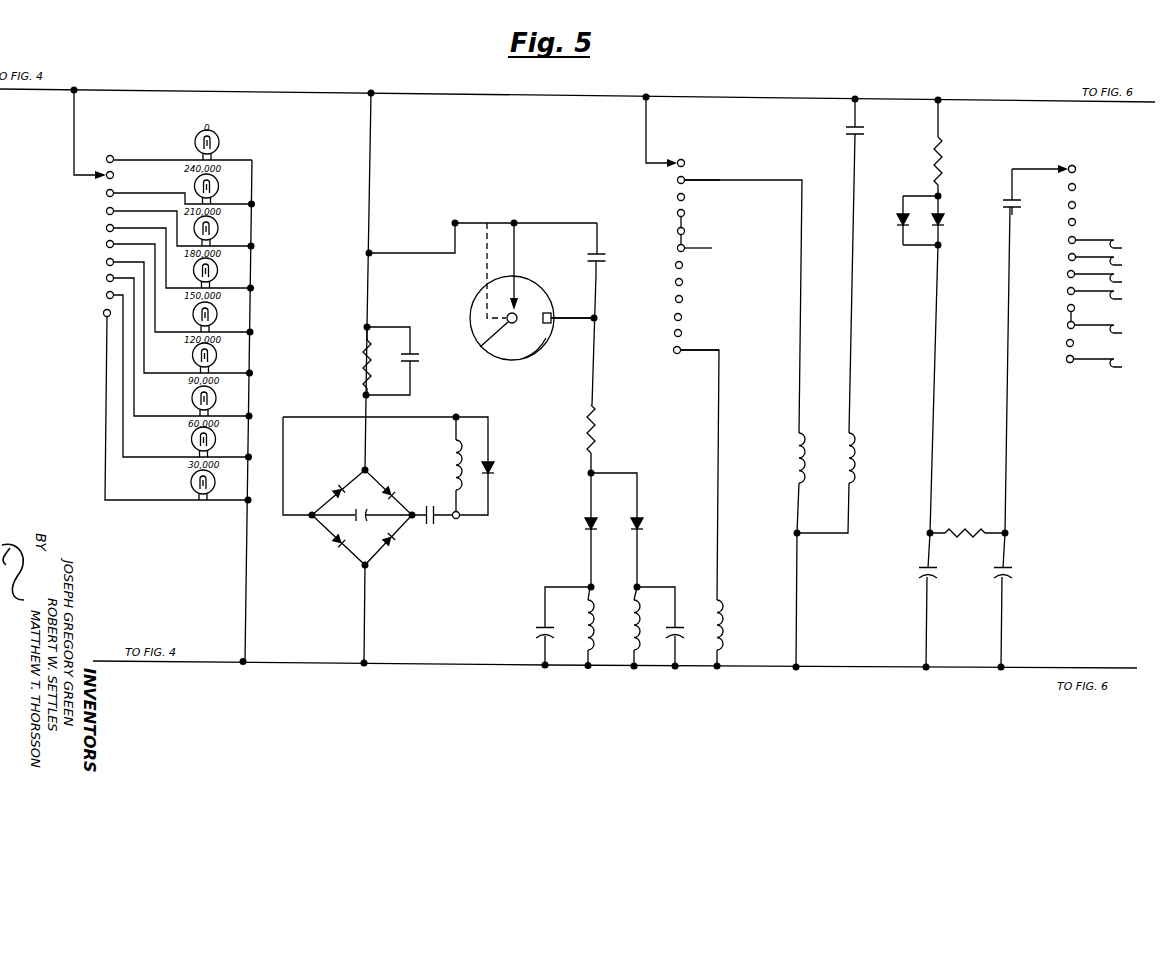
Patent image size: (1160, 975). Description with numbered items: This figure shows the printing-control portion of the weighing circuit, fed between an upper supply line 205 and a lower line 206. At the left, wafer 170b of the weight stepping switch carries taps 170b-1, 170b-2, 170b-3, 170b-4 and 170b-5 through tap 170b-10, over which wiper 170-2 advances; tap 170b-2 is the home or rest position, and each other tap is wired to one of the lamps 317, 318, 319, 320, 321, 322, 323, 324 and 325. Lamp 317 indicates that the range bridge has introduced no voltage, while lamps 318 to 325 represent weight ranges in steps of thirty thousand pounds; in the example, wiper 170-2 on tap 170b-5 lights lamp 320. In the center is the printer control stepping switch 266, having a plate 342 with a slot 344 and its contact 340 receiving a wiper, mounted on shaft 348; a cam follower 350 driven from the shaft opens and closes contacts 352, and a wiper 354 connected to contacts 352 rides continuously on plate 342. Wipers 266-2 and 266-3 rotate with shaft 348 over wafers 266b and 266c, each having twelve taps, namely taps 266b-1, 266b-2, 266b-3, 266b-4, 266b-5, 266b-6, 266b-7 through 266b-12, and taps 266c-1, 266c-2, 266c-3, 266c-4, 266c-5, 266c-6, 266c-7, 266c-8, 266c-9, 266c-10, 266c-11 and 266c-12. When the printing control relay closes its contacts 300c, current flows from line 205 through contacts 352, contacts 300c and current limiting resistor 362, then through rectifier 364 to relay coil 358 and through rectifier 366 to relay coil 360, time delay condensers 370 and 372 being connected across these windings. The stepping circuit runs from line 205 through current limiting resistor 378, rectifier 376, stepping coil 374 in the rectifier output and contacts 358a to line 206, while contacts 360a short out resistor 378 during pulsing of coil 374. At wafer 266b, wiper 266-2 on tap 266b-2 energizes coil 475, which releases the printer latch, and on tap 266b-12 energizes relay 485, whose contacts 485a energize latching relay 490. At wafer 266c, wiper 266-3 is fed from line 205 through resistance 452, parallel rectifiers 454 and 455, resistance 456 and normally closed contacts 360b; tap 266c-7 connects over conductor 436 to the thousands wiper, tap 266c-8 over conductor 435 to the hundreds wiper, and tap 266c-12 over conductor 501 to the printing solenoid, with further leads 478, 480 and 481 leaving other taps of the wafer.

The line 205 is at (300, 90).
The line 206 is at (232, 662).
The wiper 170-2 is at (84, 172).
The wafer 170b is at (66, 182).
The tap 170b-1 is at (115, 158).
The tap 170b-2 is at (114, 176).
The tap 170b-3 is at (106, 194).
The tap 170b-4 is at (106, 212).
The tap 170b-5 is at (106, 229).
The tap 170b-10 is at (106, 317).
The lamp 317 is at (220, 143).
The lamp 318 is at (221, 189).
The lamp 319 is at (221, 231).
The lamp 320 is at (220, 273).
The lamp 321 is at (220, 317).
The lamp 322 is at (219, 358).
The lamp 323 is at (219, 401).
The lamp 324 is at (218, 442).
The lamp 325 is at (218, 485).
The contacts 352 is at (450, 230).
The cam follower 350 is at (484, 263).
The wiper 354 is at (517, 259).
The printer control stepping switch 266 is at (516, 308).
The slot 344 is at (553, 313).
The contact lead 340 is at (550, 324).
The plate 342 is at (517, 356).
The shaft 348 is at (482, 351).
The current limiting resistor 378 is at (362, 359).
The contacts 360a is at (412, 351).
The rectifier 376 is at (388, 493).
The coil 374 is at (451, 463).
The contacts 358a is at (430, 523).
The current limiting resistor 362 is at (587, 430).
The rectifier 364 is at (585, 525).
The rectifier 366 is at (644, 525).
The time delay condenser 370 is at (538, 628).
The relay coil 358 is at (591, 610).
The relay coil 360 is at (630, 636).
The time delay condenser 372 is at (678, 625).
The relay 485 is at (722, 625).
The contacts 300c is at (597, 264).
The wiper 266-2 is at (658, 160).
The switch contact 266b-1 is at (685, 162).
The tap 266b-2 is at (677, 180).
The switch contact 266b-3 is at (677, 197).
The switch contact 266b-4 is at (677, 213).
The switch contact 266b-5 is at (677, 231).
The tap 266b-6 is at (677, 248).
The switch contact 266b-7 is at (683, 265).
The tap 266b-12 is at (675, 354).
The wafer 266b is at (663, 294).
The contacts 485a is at (861, 133).
The rectifier 454 is at (898, 219).
The current limiting resistance 452 is at (946, 152).
The rectifier 455 is at (945, 219).
The contacts 360b is at (1009, 200).
The wiper 266-3 is at (1041, 168).
The switch contact 266c-1 is at (1076, 169).
The switch contact 266c-2 is at (1076, 187).
The switch contact 266c-3 is at (1076, 205).
The switch contact 266c-4 is at (1076, 222).
The switch contact 266c-5 is at (1068, 240).
The switch contact 266c-6 is at (1068, 257).
The tap 266c-7 is at (1067, 275).
The tap 266c-8 is at (1067, 292).
The switch contact 266c-9 is at (1067, 309).
The switch contact 266c-10 is at (1067, 326).
The switch contact 266c-11 is at (1066, 344).
The tap 266c-12 is at (1066, 361).
The wafer 266c is at (1082, 369).
The lead 478 is at (1112, 247).
The lead 480 is at (1112, 264).
The conductor 436 is at (1112, 281).
The conductor 435 is at (1112, 299).
The lead 481 is at (1112, 333).
The conductor 501 is at (1111, 367).
The coil 475 is at (795, 472).
The latching relay 490 is at (857, 461).
The resistance 456 is at (961, 529).